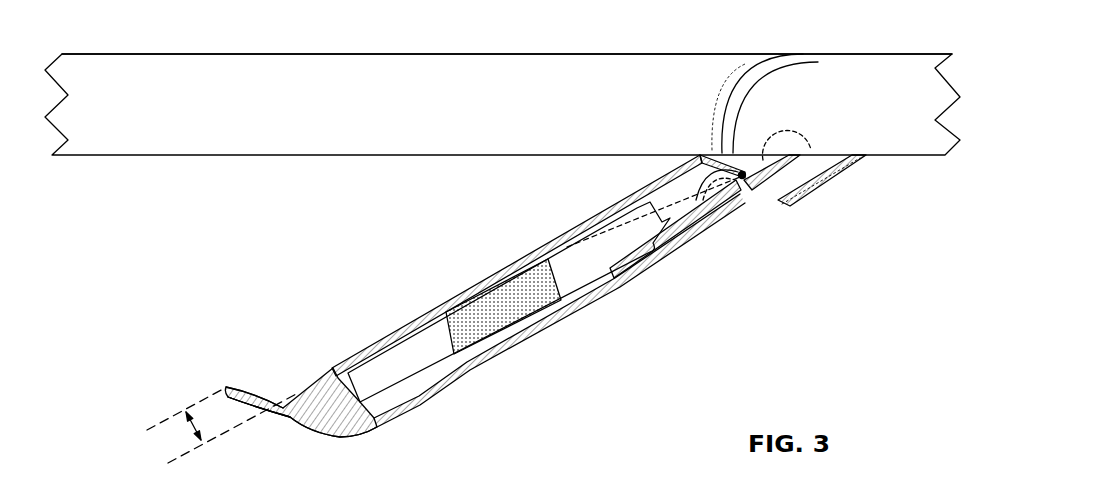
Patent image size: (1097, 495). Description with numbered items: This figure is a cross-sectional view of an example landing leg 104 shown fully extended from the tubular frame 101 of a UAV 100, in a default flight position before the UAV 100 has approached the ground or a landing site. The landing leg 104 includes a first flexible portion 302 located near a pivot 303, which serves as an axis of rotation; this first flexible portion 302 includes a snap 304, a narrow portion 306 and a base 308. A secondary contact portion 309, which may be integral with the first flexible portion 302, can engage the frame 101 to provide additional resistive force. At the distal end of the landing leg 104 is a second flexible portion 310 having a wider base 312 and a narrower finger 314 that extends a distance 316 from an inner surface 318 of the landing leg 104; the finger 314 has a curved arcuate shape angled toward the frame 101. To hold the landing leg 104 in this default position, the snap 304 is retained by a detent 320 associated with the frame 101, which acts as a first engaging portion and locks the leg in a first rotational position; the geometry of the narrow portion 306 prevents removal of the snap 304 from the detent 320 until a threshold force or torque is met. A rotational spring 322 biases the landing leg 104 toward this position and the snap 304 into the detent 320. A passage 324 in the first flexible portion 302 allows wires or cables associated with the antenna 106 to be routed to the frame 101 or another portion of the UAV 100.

The UAV 100 is at (155, 147).
The tubular frame 101 is at (221, 115).
The landing leg 104 is at (514, 244).
The antenna 106 is at (463, 300).
The first flexible portion 302 is at (757, 215).
The pivot 303 is at (745, 160).
The snap 304 is at (777, 198).
The narrow portion 306 is at (737, 207).
The base 308 is at (670, 252).
The secondary contact portion 309 is at (700, 152).
The second flexible portion 310 is at (357, 446).
The wider base 312 is at (340, 434).
The finger 314 is at (237, 380).
The distance 316 is at (223, 425).
The inner surface 318 is at (370, 350).
The detent 320 is at (823, 162).
The rotational spring 322 is at (732, 88).
The passage 324 is at (658, 175).